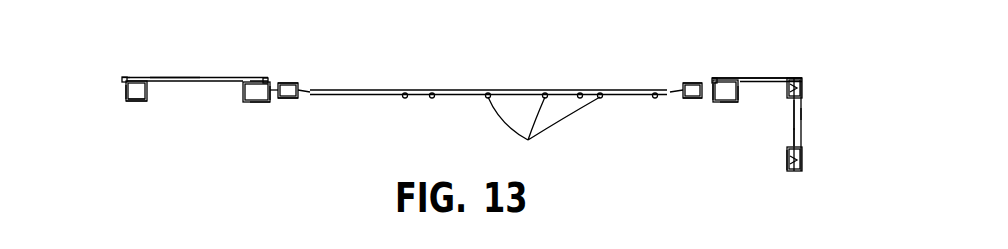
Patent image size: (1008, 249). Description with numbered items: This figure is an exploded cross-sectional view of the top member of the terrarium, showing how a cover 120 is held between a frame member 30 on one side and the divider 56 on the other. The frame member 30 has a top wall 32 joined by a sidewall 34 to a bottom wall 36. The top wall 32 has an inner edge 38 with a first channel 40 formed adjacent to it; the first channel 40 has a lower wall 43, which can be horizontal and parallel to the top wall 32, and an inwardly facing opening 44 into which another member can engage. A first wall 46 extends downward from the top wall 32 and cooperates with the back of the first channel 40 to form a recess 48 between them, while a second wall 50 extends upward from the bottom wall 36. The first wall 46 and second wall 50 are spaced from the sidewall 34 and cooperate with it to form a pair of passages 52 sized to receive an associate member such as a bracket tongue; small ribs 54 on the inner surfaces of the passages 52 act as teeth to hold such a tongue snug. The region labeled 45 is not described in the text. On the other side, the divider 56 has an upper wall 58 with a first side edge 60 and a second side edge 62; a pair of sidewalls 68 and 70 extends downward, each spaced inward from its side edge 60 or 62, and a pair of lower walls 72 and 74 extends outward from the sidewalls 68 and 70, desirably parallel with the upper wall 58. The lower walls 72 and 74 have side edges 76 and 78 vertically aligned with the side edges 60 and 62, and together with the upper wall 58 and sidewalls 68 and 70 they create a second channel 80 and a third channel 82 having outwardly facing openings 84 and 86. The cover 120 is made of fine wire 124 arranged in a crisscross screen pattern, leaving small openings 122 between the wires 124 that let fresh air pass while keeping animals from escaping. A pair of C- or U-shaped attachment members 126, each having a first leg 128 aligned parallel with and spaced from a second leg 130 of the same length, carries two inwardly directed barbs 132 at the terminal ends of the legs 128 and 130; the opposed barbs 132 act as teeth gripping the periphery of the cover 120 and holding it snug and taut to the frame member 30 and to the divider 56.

The frame member 30 is at (841, 43).
The top wall 32 is at (752, 78).
The sidewall 34 is at (803, 134).
The bottom wall 36 is at (793, 173).
The inner edge 38 is at (712, 80).
The first channel 40 is at (704, 108).
The lower wall 43 is at (725, 103).
The inwardly facing opening 44 is at (712, 78).
The leg wall 45 is at (760, 112).
The first wall 46 is at (790, 92).
The recess 48 is at (764, 112).
The second wall 50 is at (792, 157).
The passage 52 is at (806, 118).
The rib 54 is at (795, 94).
The divider 56 is at (208, 58).
The upper wall 58 is at (167, 80).
The first side edge 60 is at (122, 80).
The second side edge 62 is at (265, 78).
The sidewall 68 is at (148, 88).
The sidewall 70 is at (243, 90).
The lower wall 72 is at (136, 102).
The lower wall 74 is at (257, 102).
The side edge 76 is at (120, 100).
The side edge 78 is at (272, 102).
The second channel 80 is at (118, 94).
The third channel 82 is at (280, 98).
The outwardly facing opening 84 is at (120, 88).
The outwardly facing opening 86 is at (272, 88).
The cover 120 is at (473, 70).
The opening 122 is at (403, 92).
The fine wire 124 is at (544, 129).
The attachment member 126 is at (305, 72).
The first leg 128 is at (300, 86).
The second leg 130 is at (290, 97).
The barb 132 is at (302, 95).